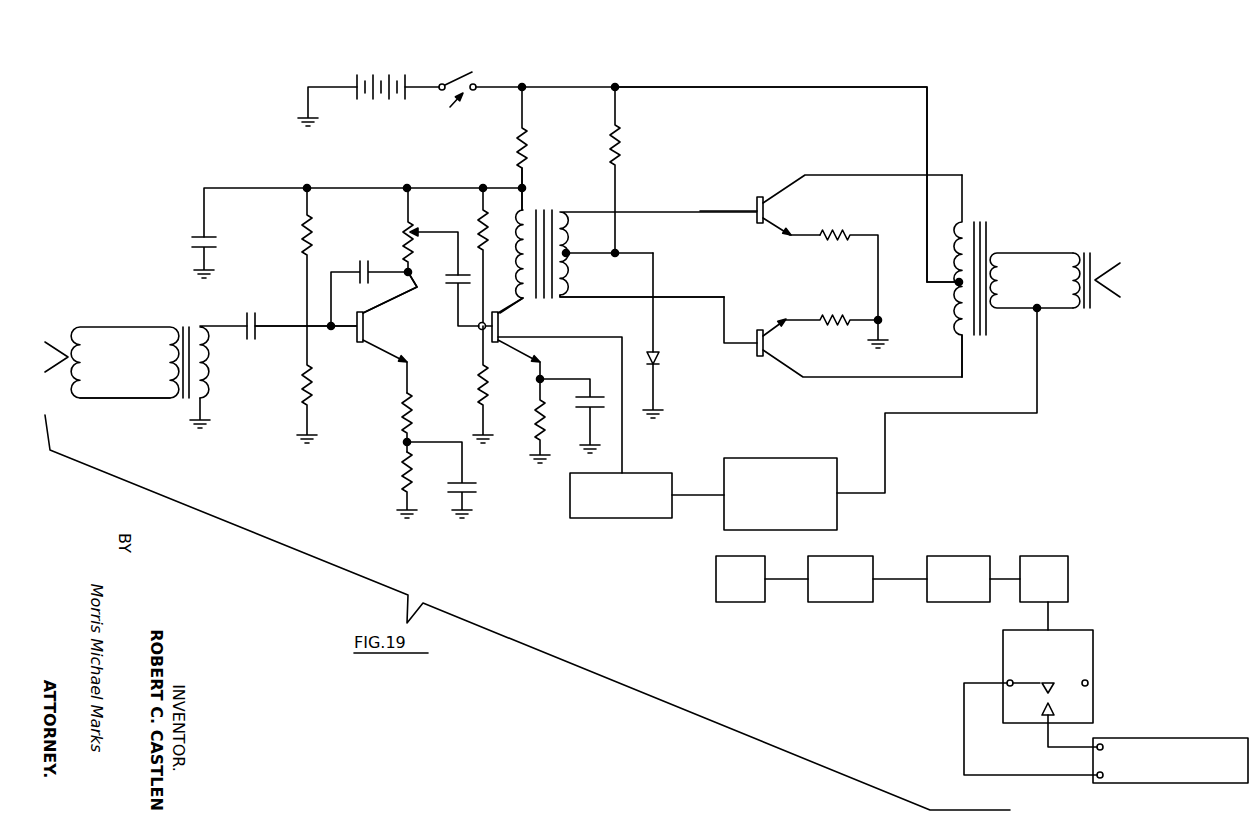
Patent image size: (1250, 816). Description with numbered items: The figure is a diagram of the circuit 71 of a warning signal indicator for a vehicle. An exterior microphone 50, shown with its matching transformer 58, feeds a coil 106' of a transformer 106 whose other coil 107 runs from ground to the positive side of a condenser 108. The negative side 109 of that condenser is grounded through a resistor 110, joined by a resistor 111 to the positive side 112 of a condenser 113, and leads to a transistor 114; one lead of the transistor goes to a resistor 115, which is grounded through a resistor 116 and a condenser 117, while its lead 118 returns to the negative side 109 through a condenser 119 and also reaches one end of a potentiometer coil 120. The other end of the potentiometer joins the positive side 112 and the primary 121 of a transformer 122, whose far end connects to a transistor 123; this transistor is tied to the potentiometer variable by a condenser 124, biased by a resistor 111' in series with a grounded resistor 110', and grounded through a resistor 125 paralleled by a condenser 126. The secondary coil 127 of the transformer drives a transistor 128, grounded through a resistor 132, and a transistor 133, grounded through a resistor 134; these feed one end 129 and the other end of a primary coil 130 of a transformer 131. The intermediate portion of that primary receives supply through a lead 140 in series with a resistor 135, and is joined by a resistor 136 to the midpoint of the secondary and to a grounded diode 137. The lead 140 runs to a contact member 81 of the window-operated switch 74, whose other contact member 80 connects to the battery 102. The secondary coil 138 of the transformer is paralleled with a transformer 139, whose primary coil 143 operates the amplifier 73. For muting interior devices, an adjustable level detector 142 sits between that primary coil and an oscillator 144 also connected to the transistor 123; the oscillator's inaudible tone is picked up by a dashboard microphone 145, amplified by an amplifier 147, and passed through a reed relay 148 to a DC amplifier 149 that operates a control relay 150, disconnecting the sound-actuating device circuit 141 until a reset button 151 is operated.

The circuit 71 is at (232, 130).
The battery 102 is at (362, 76).
The contact member 80 is at (459, 73).
The window-operated switch 74 is at (447, 111).
The contact member 81 is at (475, 91).
The lead 140 is at (759, 88).
The resistor 135 is at (527, 145).
The resistor 136 is at (619, 151).
The positive side 112 is at (203, 211).
The condenser 113 is at (201, 236).
The resistor 111 is at (324, 257).
The condenser 119 is at (360, 264).
The potentiometer coil 120 is at (412, 226).
The primary 121 is at (526, 208).
The transformer 122 is at (562, 208).
The transistor 133 is at (756, 206).
The resistor 134 is at (846, 222).
The primary coil 130 is at (966, 222).
The secondary coil 138 is at (999, 277).
The primary coil 143 is at (1069, 252).
The amplifier 73 is at (1114, 266).
The resistor 111' is at (502, 255).
The condenser 124 is at (453, 290).
The secondary coil 127 is at (563, 299).
The end of primary coil 129 is at (961, 333).
The transformer 131 is at (983, 338).
The transformer 139 is at (1085, 310).
The microphone 50 is at (62, 335).
The matching transformer 58 is at (167, 352).
The transformer 106 is at (206, 347).
The coil 107 is at (205, 370).
The coil 106' is at (134, 381).
The condenser 108 is at (262, 313).
The negative side 109 is at (294, 329).
The resistor 110 is at (295, 384).
The transistor 114 is at (356, 342).
The lead 118 is at (393, 297).
The transistor 123 is at (497, 343).
The resistor 110' is at (468, 384).
The resistor 125 is at (538, 416).
The condenser 126 is at (589, 407).
The diode 137 is at (661, 363).
The transistor 128 is at (757, 356).
The resistor 132 is at (832, 322).
The resistor 115 is at (403, 416).
The resistor 116 is at (403, 469).
The condenser 117 is at (470, 491).
The oscillator 144 is at (645, 519).
The adjustable level detector 142 is at (839, 515).
The microphone 145 is at (748, 603).
The amplifier 147 is at (848, 603).
The reed relay 148 is at (955, 549).
The DC amplifier 149 is at (1043, 549).
The control relay 150 is at (1093, 637).
The reset button 151 is at (1089, 684).
The sound-actuating device circuit 141 is at (1168, 738).